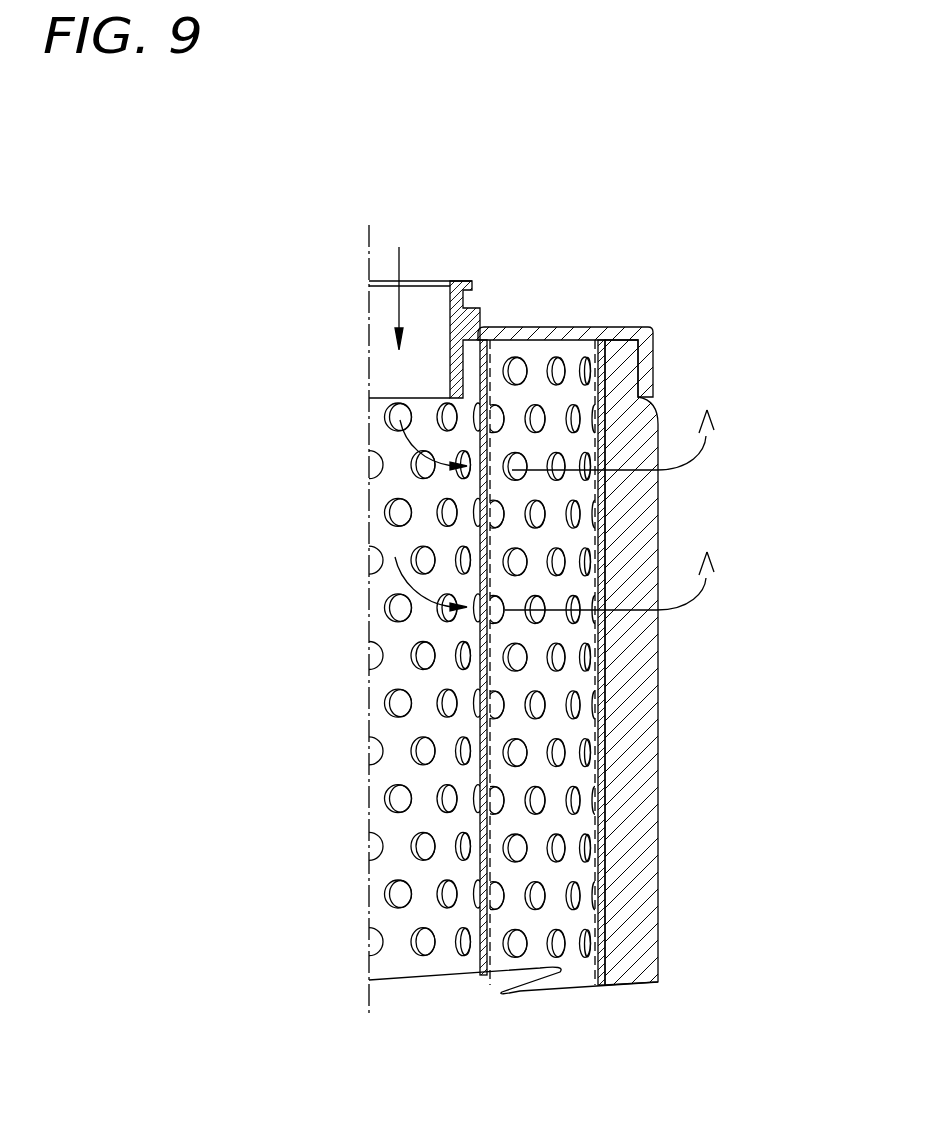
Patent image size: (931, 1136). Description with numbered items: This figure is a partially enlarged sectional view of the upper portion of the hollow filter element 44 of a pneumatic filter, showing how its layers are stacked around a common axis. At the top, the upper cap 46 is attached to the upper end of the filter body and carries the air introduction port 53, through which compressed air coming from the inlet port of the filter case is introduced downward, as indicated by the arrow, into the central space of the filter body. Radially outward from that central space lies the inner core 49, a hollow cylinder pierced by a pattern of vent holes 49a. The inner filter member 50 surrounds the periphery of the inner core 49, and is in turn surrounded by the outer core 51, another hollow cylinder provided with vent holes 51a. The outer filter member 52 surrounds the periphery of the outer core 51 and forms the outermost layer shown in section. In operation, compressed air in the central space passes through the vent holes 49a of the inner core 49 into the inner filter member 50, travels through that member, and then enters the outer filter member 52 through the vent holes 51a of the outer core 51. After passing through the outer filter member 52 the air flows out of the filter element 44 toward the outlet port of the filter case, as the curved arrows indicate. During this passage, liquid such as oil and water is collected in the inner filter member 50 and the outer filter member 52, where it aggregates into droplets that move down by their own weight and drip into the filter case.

The filter element 44 is at (511, 619).
The upper cap 46 is at (524, 335).
The inner core 49 is at (450, 698).
The vent holes 49a is at (411, 752).
The inner filter member 50 is at (570, 828).
The outer core 51 is at (621, 657).
The vent holes 51a is at (583, 555).
The outer filter member 52 is at (627, 895).
The air introduction port 53 is at (383, 311).